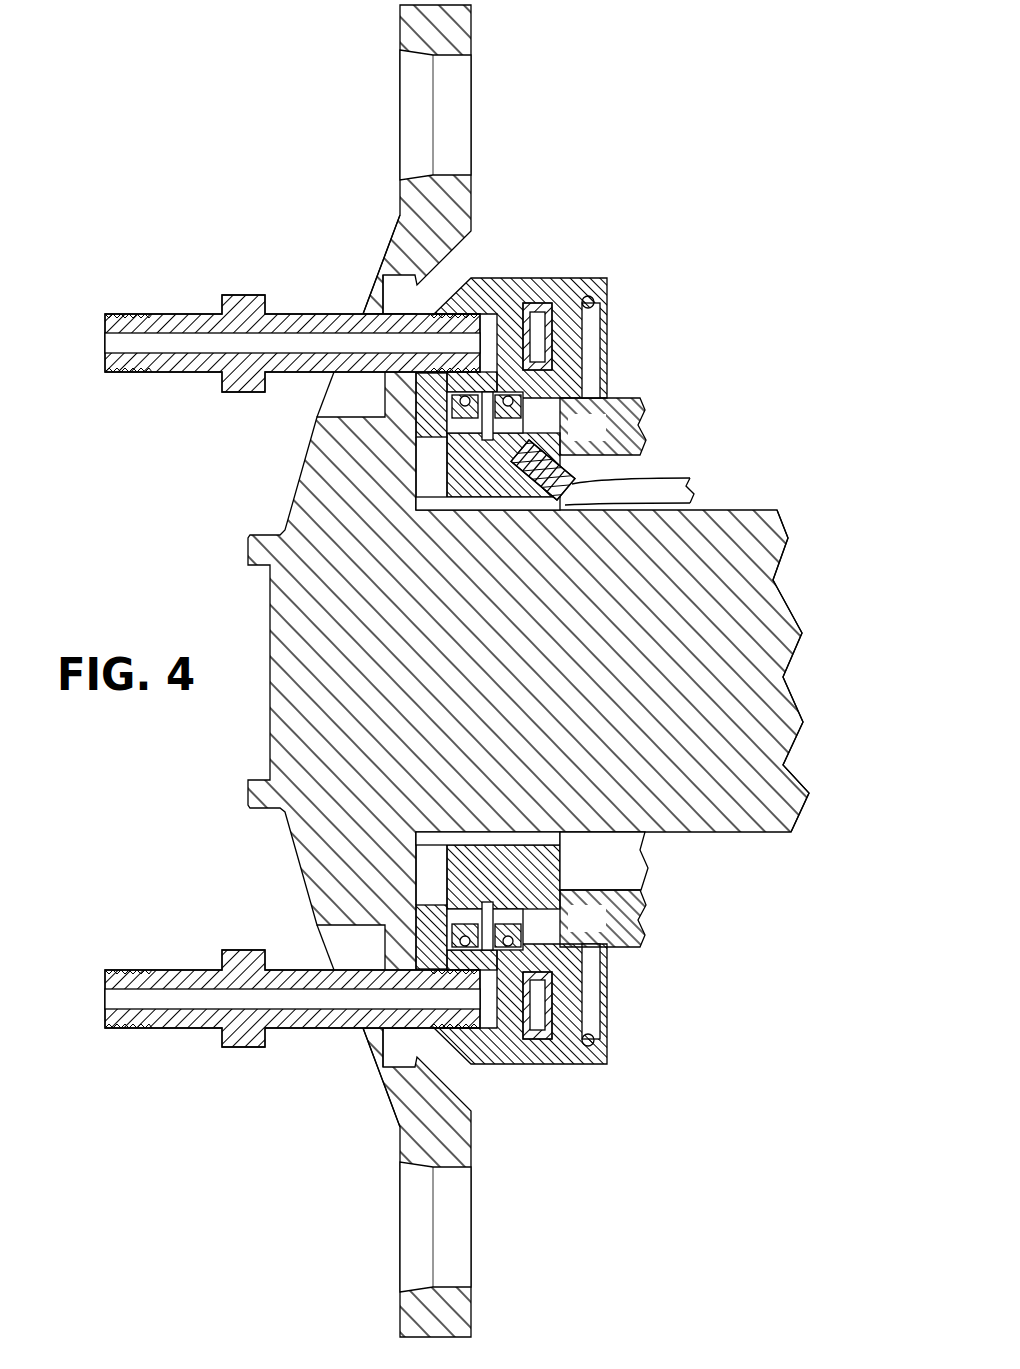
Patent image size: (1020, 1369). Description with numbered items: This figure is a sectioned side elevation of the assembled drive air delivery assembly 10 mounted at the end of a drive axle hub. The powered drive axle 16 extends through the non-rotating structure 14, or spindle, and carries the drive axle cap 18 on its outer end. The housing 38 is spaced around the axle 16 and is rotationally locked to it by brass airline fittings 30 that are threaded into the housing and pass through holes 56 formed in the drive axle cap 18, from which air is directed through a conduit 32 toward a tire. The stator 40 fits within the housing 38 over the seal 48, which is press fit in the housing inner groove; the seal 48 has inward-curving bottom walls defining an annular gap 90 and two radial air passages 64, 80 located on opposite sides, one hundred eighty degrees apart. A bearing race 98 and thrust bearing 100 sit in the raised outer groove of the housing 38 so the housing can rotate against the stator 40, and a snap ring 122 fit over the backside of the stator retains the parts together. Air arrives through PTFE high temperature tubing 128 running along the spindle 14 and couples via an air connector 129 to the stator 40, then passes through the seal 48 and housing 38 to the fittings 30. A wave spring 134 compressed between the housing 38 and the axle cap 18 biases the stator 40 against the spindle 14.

The drive air delivery assembly 10 is at (273, 183).
The non-rotating structure 14 is at (615, 396).
The powered drive axle 16 is at (735, 510).
The drive axle cap 18 is at (300, 468).
The brass airline fittings 30 is at (176, 314).
The conduit 32 is at (176, 970).
The housing 38 is at (538, 278).
The stator 40 is at (505, 510).
The seal 48 is at (460, 510).
The holes 56 is at (375, 296).
The radial air passage 64 is at (520, 428).
The second radial air passage 80 is at (520, 918).
The annular gap 90 is at (485, 897).
The bearing race 98 is at (505, 1066).
The thrust bearing 100 is at (555, 1066).
The snap ring 122 is at (600, 993).
The PTFE high temperature tubing 128 is at (660, 470).
The air connector 129 is at (560, 512).
The wave spring 134 is at (415, 406).